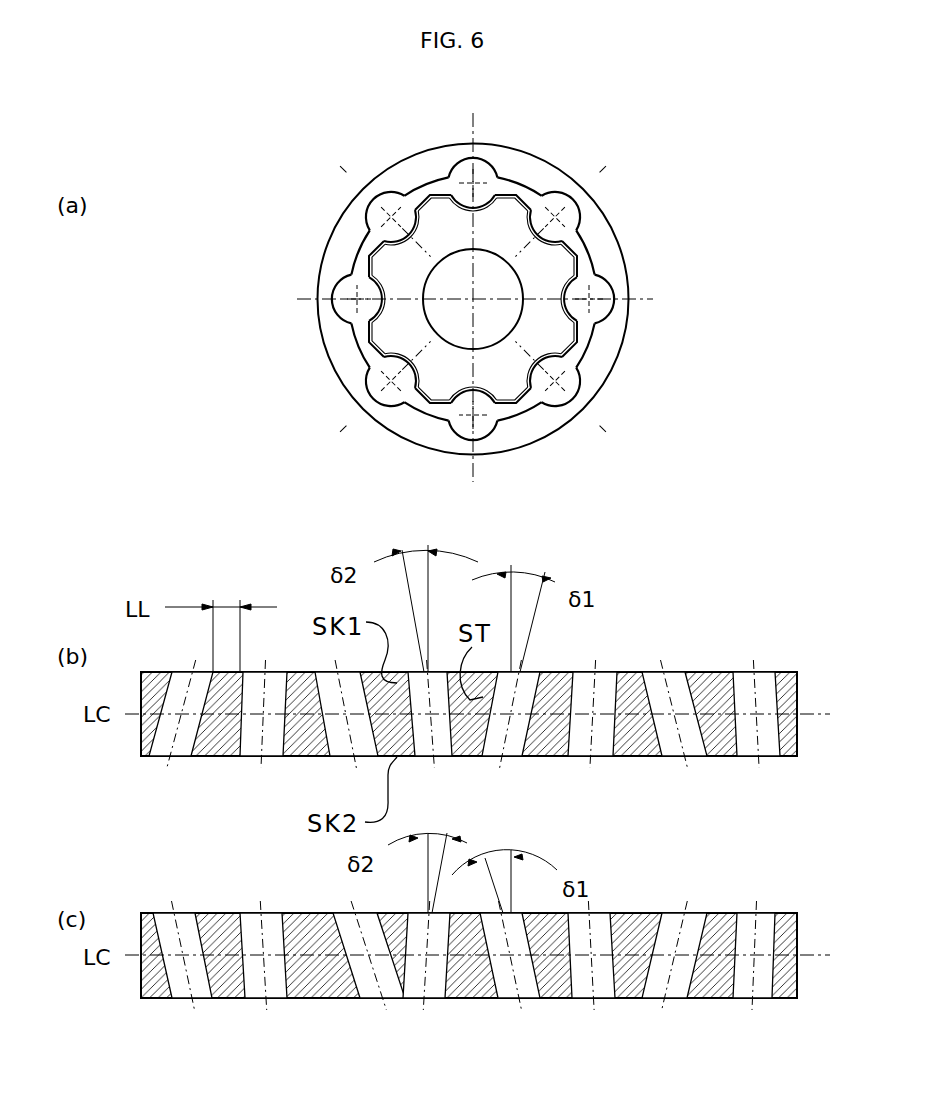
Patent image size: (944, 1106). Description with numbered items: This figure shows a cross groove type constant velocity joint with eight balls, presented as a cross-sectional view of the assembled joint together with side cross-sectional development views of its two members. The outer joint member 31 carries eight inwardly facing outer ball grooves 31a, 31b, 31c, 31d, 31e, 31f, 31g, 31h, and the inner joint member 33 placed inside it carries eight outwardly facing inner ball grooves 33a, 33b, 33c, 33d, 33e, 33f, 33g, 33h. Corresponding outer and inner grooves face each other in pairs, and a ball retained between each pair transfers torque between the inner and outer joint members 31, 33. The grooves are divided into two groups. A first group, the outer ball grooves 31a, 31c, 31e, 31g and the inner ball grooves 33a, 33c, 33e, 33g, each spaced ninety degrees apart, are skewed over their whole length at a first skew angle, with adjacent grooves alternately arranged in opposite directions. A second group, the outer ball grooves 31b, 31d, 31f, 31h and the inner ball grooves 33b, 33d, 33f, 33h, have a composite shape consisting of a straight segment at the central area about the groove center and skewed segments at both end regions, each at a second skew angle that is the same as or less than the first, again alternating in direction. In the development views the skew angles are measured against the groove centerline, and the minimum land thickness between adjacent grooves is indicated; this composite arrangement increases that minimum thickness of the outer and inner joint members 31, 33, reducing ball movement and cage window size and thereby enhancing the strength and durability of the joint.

The outer joint member 31 is at (430, 158).
The inner joint member 33 is at (580, 367).
The outer ball groove 31a is at (493, 163).
The outer ball groove 31b is at (580, 203).
The outer ball groove 31c is at (625, 303).
The outer ball groove 31d is at (590, 387).
The outer ball groove 31e is at (497, 423).
The outer ball groove 31f is at (363, 402).
The outer ball groove 31g is at (345, 322).
The outer ball groove 31h is at (362, 190).
The inner ball groove 33a is at (493, 190).
The inner ball groove 33b is at (580, 260).
The inner ball groove 33c is at (593, 343).
The inner ball groove 33d is at (560, 427).
The inner ball groove 33e is at (436, 420).
The inner ball groove 33f is at (352, 372).
The inner ball groove 33g is at (342, 265).
The inner ball groove 33h is at (423, 180).